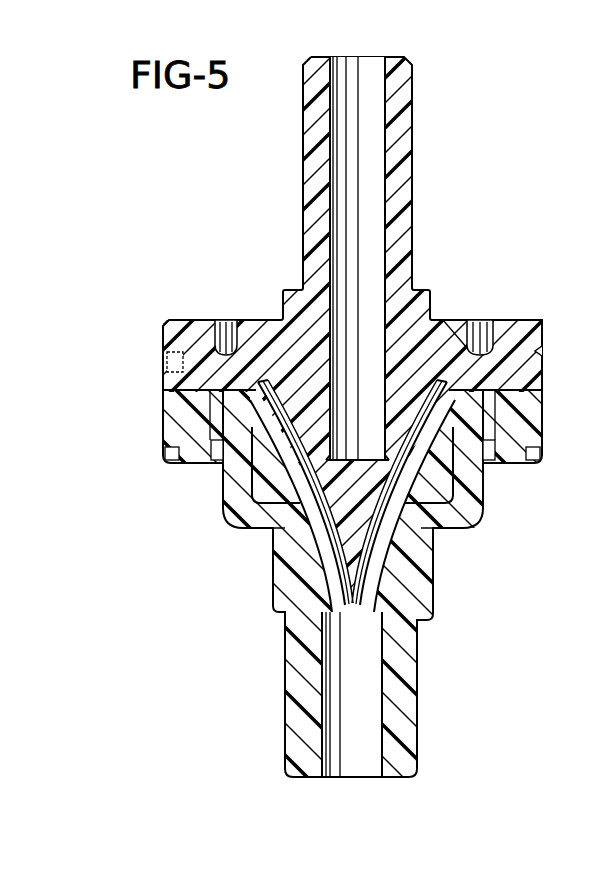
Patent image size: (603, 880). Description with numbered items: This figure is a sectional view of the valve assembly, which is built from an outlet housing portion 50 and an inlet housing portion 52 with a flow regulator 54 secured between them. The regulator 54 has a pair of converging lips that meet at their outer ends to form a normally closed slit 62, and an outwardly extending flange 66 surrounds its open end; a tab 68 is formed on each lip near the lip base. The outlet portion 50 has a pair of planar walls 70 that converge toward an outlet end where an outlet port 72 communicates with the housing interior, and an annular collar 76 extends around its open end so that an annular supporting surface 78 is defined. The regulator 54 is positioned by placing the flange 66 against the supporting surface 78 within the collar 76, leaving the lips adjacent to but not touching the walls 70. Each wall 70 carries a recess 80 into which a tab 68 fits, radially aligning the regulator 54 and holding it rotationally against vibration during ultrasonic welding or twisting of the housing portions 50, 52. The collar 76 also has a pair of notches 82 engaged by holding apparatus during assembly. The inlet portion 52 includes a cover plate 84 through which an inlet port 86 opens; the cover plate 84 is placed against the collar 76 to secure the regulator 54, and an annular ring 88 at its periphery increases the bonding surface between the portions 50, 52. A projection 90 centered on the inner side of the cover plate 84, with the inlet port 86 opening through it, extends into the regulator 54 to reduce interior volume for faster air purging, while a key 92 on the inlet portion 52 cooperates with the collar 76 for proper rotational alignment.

The outlet housing portion 50 is at (496, 529).
The inlet housing portion 52 is at (424, 238).
The flow regulator 54 is at (330, 576).
The normally closed slit 62 is at (353, 610).
The outwardly extending flange 66 is at (172, 441).
The tab 68 is at (302, 486).
The planar wall 70 is at (280, 530).
The outlet port 72 is at (328, 683).
The annular collar 76 is at (182, 408).
The annular supporting surface 78 is at (222, 452).
The recess 80 is at (232, 508).
The notch 82 is at (168, 456).
The cover plate 84 is at (240, 314).
The inlet port 86 is at (342, 232).
The annular ring 88 is at (528, 334).
The projection 90 is at (395, 440).
The key 92 is at (170, 372).